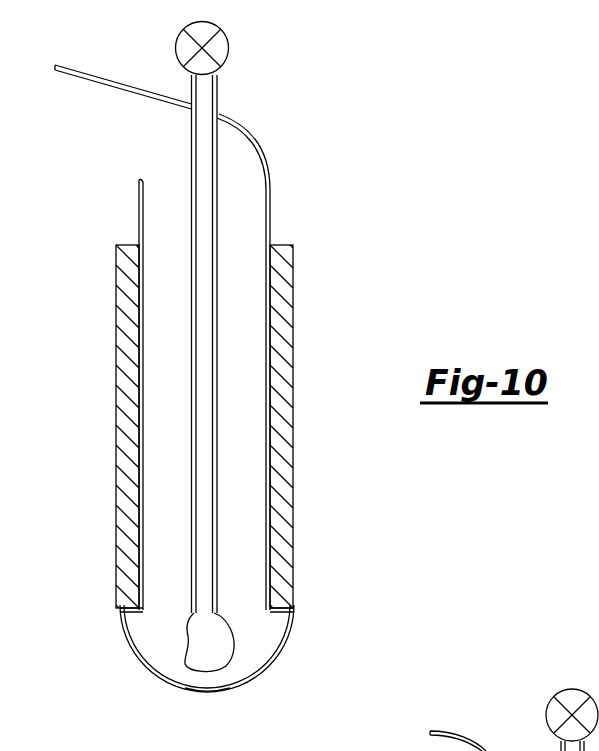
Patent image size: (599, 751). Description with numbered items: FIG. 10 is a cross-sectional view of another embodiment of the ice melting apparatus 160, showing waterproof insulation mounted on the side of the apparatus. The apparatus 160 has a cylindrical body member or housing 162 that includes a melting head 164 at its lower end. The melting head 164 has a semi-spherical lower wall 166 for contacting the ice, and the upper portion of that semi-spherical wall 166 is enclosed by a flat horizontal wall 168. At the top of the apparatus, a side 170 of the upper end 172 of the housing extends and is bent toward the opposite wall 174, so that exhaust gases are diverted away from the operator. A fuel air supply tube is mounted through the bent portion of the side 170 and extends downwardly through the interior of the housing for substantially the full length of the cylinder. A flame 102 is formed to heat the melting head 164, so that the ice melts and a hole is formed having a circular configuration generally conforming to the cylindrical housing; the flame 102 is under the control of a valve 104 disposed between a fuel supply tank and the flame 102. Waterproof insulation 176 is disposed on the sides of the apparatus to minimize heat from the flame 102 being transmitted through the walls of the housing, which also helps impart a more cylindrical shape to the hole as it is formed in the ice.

The flame 102 is at (206, 645).
The valve 104 is at (246, 39).
The ice melting apparatus 160 is at (298, 212).
The cylindrical body member or housing 162 is at (283, 487).
The melting head 164 is at (275, 668).
The semi-spherical lower wall 166 is at (210, 690).
The flat horizontal wall 168 is at (285, 606).
The side 170 is at (243, 132).
The upper end 172 is at (139, 210).
The opposite wall 174 is at (141, 180).
The waterproof insulation 176 is at (162, 365).